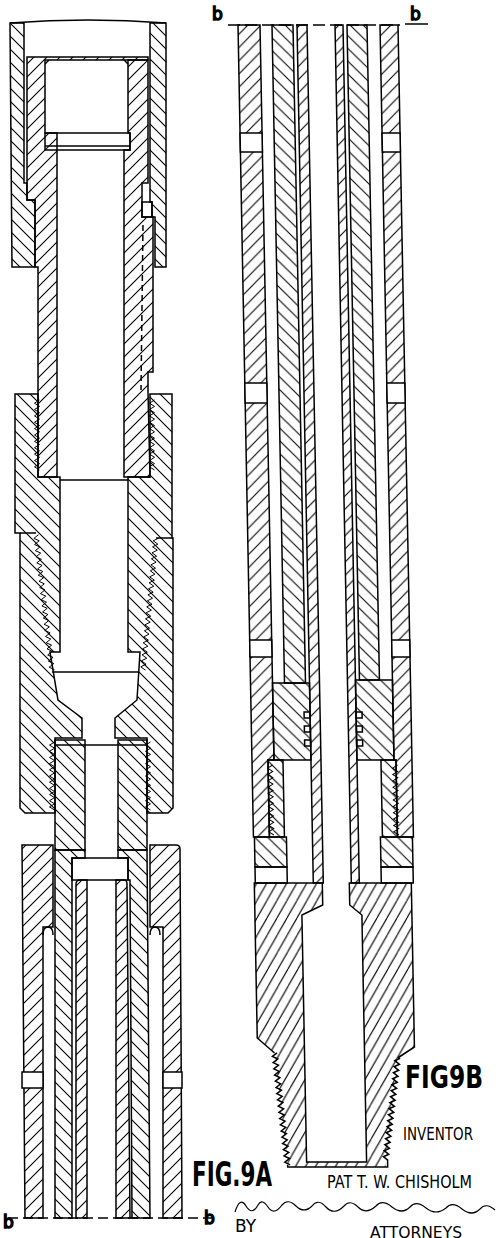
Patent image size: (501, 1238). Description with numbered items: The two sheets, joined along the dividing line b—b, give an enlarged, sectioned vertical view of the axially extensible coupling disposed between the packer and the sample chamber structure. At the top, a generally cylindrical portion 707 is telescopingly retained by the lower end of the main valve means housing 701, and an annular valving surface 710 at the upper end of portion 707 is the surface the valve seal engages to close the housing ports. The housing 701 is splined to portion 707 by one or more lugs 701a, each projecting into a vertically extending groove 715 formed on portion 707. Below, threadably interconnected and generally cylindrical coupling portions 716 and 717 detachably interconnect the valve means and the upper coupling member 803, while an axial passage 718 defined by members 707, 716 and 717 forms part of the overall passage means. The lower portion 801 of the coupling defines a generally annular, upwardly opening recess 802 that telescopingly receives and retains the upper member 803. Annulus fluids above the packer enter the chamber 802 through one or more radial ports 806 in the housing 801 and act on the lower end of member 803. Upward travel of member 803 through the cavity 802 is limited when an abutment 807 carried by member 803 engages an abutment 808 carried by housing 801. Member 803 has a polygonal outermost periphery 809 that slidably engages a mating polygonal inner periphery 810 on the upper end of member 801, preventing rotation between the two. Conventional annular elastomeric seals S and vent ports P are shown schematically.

In FIG. 9A, the main valve means housing 701 is at (158, 130).
In FIG. 9A, the lugs 701a is at (152, 210).
In FIG. 9A, the generally cylindrical portion 707 is at (137, 332).
In FIG. 9A, the annular valving surface 710 is at (128, 108).
In FIG. 9A, the vertically extending groove 715 is at (146, 286).
In FIG. 9A, the coupling portion 716 is at (157, 470).
In FIG. 9A, the coupling portion 717 is at (157, 641).
In FIG. 9A, the axial passage 718 is at (90, 386).
In FIG. 9A, the lower portion of coupling means 801 is at (125, 1145).
In FIG. 9B, the lower portion of coupling means 801 is at (343, 222).
In FIG. 9A, the annular upwardly opening recess 802 is at (157, 1030).
In FIG. 9B, the annular upwardly opening recess 802 is at (378, 488).
In FIG. 9A, the upper generally cylindrical member 803 is at (143, 897).
In FIG. 9B, the upper generally cylindrical member 803 is at (360, 322).
In FIG. 9B, the radial ports 806 is at (403, 873).
In FIG. 9B, the abutment 807 is at (375, 678).
In FIG. 9A, the abutment 808 is at (152, 928).
In FIG. 9A, the polygonal outermost periphery 809 is at (133, 832).
In FIG. 9A, the polygonal inner periphery 810 is at (142, 903).
In FIG. 9A, the vent ports P is at (177, 1080).
In FIG. 9B, the vent ports P is at (390, 143).
In FIG. 9B, the annular elastomeric seals S is at (360, 730).